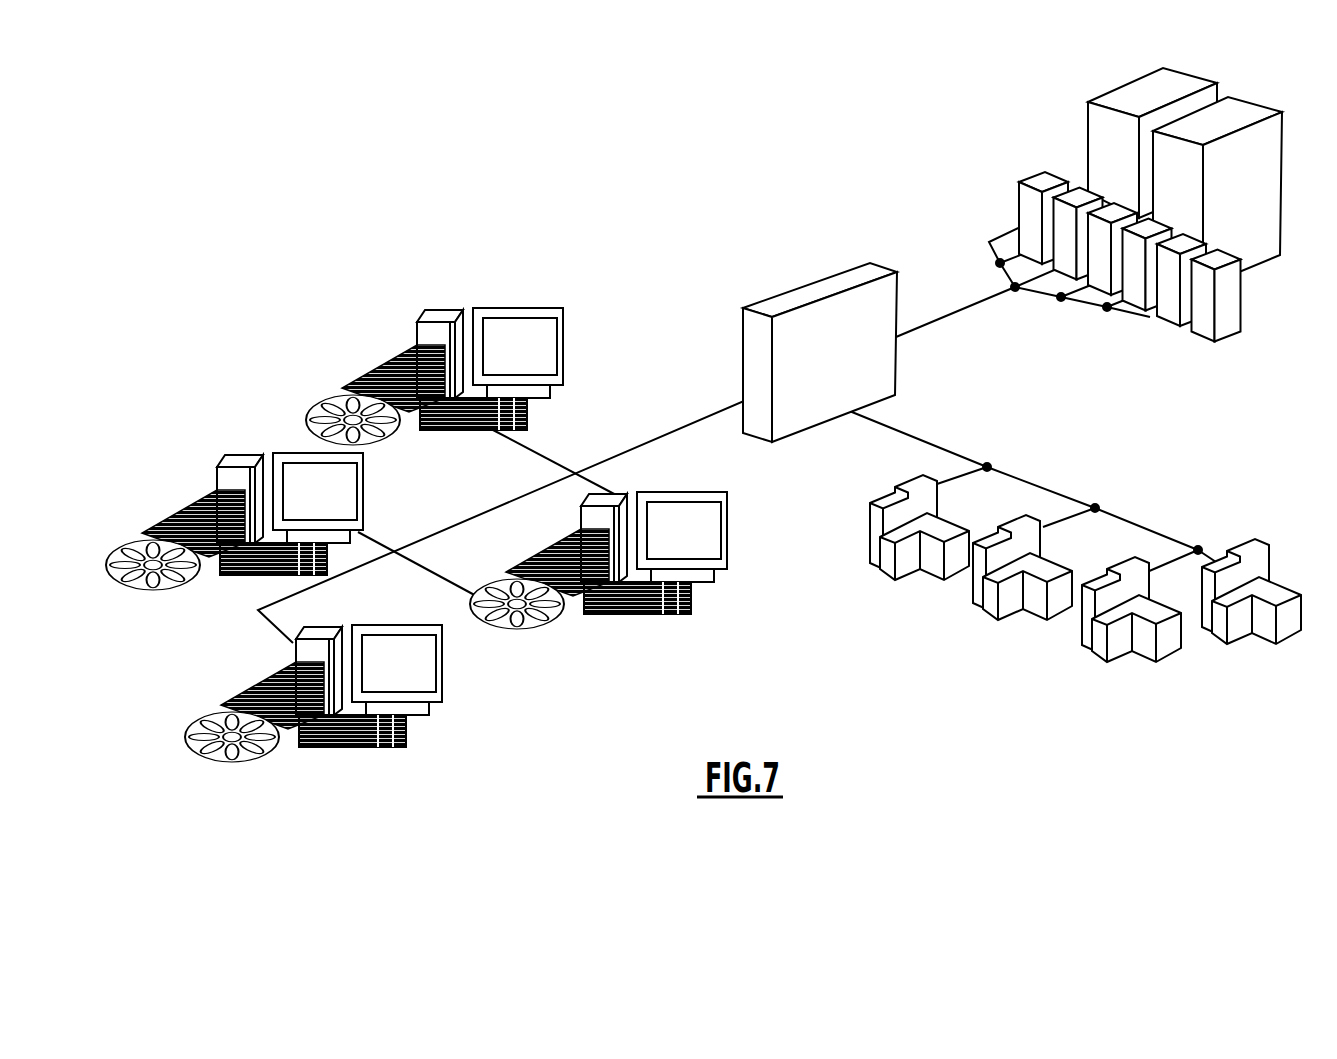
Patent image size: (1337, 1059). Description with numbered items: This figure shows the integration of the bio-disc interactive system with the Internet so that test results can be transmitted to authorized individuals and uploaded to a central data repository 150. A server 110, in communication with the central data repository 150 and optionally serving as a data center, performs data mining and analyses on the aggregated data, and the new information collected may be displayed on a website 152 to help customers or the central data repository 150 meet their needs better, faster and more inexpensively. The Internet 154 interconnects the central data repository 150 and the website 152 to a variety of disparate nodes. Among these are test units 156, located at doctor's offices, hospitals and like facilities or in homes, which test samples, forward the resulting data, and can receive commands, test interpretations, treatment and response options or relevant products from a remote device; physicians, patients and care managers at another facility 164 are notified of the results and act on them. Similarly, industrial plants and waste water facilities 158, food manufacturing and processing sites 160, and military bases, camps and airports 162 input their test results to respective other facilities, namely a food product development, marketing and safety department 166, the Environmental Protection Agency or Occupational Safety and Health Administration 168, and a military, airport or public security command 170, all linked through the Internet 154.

The server 110 is at (1230, 310).
The central data repository 150 is at (1240, 112).
The website 152 is at (895, 360).
The Internet 154 is at (947, 450).
The test units 156 is at (563, 333).
The industrial plants and waste water facilities 158 is at (362, 478).
The food manufacturing and processing sites 160 is at (438, 662).
The military bases, camps and airports 162 is at (727, 528).
The other facility 164 is at (893, 567).
The food product development, marketing and safety department 166 is at (997, 610).
The Environmental Protection Agency or Occupational Safety and Health Administration 168 is at (1102, 653).
The military, airport or public security command 170 is at (1267, 632).